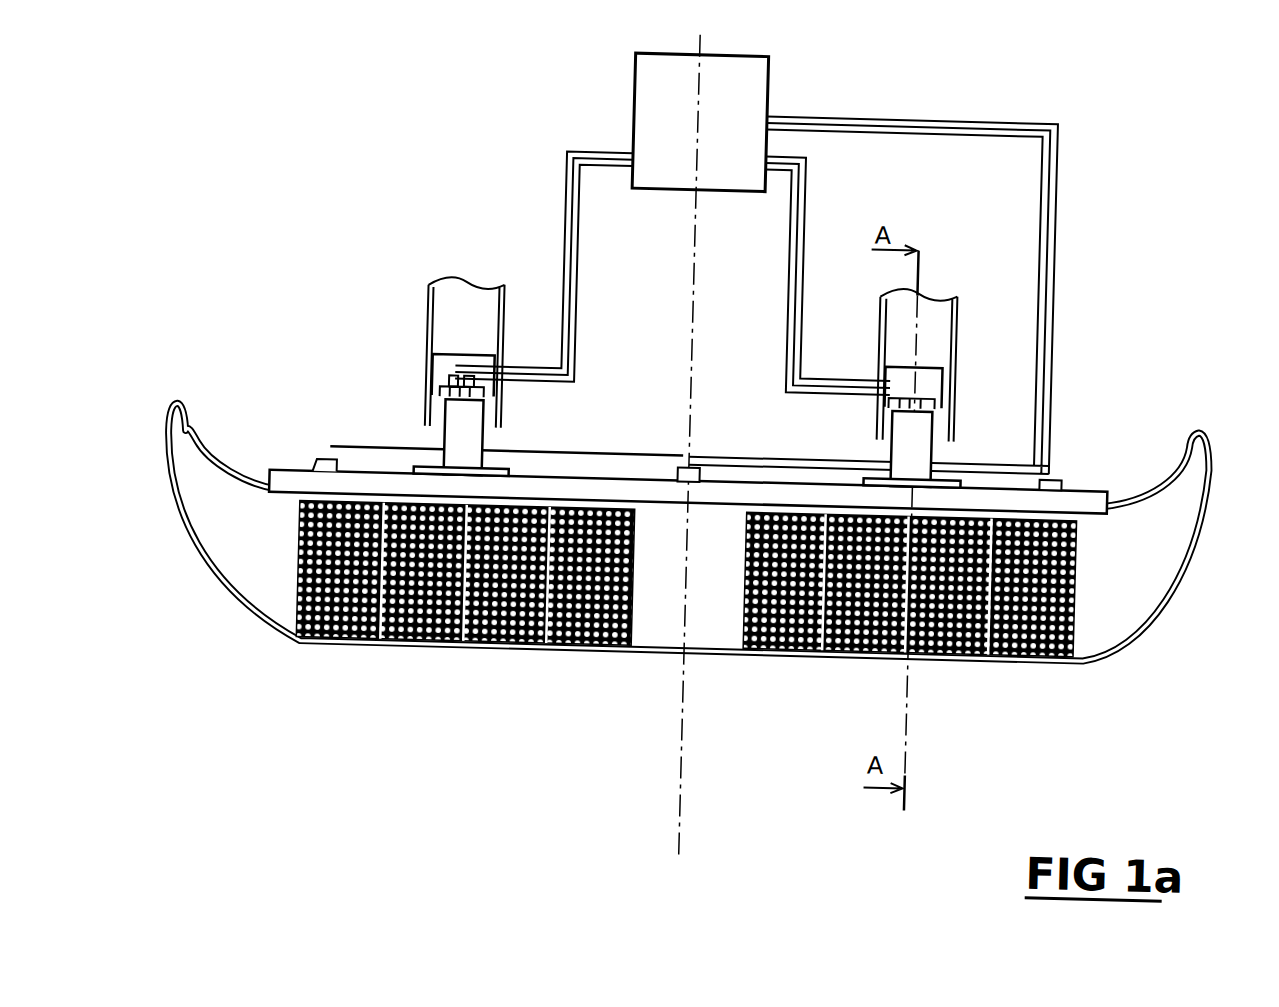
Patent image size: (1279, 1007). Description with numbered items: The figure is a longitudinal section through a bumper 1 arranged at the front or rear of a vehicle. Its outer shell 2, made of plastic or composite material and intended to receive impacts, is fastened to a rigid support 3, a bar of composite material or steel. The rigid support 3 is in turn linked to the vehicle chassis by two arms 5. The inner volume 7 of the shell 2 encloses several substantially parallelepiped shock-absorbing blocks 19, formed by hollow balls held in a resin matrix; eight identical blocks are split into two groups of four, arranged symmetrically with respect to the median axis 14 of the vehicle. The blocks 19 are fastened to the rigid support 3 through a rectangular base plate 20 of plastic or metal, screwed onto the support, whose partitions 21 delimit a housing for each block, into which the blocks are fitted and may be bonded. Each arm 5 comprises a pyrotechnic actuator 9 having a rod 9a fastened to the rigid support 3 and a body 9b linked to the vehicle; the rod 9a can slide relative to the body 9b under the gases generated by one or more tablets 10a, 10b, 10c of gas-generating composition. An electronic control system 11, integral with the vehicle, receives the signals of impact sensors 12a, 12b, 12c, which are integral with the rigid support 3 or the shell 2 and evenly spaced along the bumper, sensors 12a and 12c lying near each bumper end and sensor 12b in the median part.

The bumper 1 is at (466, 704).
The shell 2 is at (1202, 524).
The rigid support 3 is at (1090, 487).
The arm 5 is at (402, 309).
The inner volume 7 is at (248, 562).
The pyrotechnic actuator 9 is at (962, 409).
The rod 9a is at (460, 442).
The body 9b is at (411, 382).
The tablet of gas-generating composition 10a is at (444, 405).
The tablet of gas-generating composition 10b is at (452, 386).
The tablet of gas-generating composition 10c is at (467, 386).
The electronic control system 11 is at (725, 99).
The impact sensor 12a is at (319, 472).
The impact sensor 12b is at (684, 468).
The impact sensor 12c is at (1058, 476).
The median axis 14 is at (686, 228).
The shock-absorbing block 19 is at (339, 650).
The base plate 20 is at (739, 534).
The partition 21 is at (651, 531).